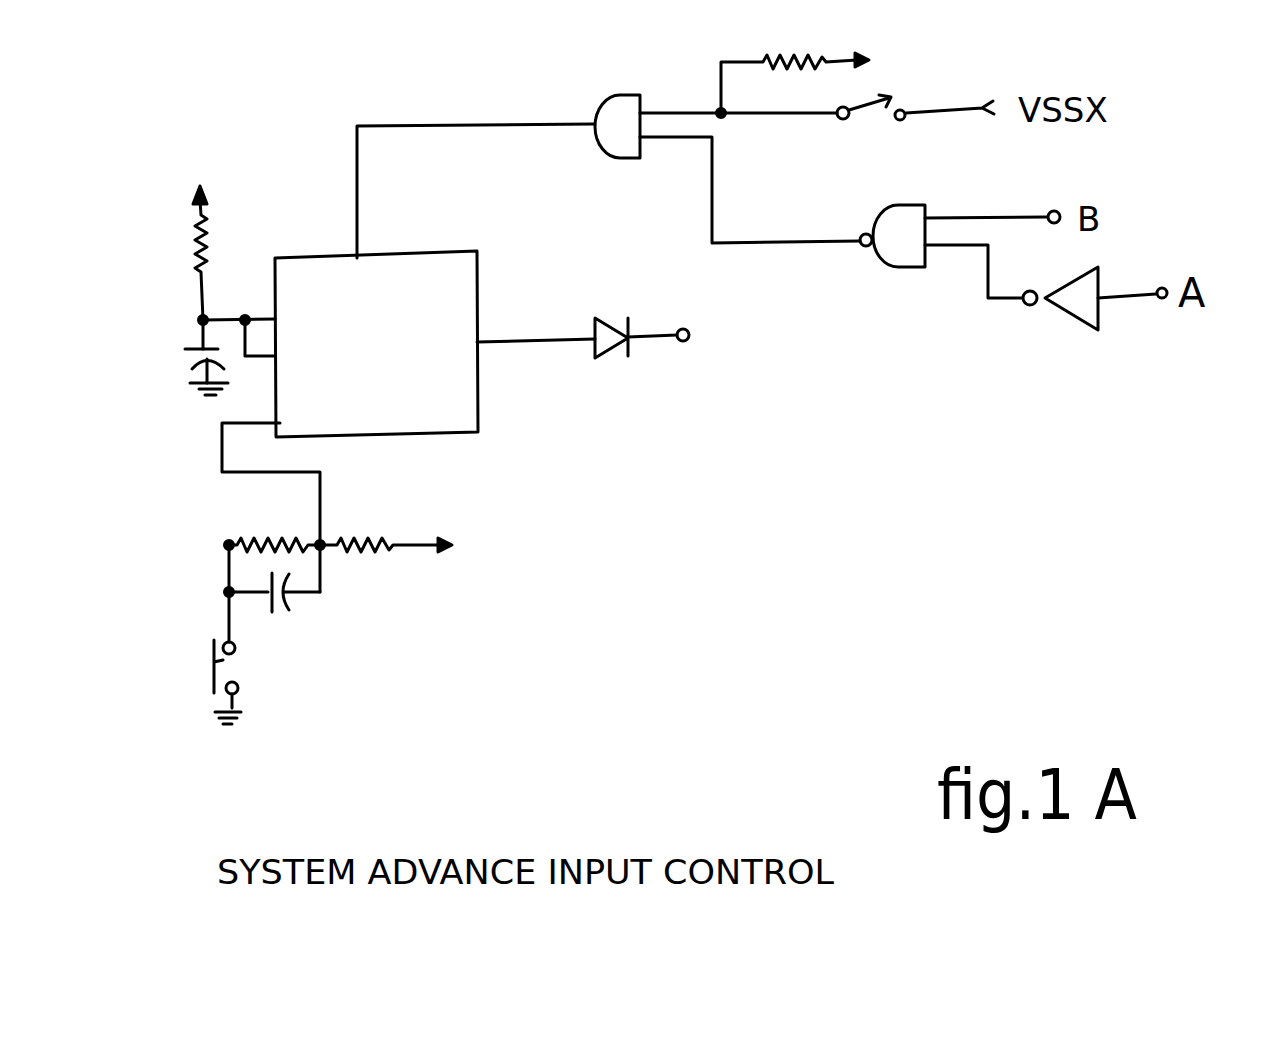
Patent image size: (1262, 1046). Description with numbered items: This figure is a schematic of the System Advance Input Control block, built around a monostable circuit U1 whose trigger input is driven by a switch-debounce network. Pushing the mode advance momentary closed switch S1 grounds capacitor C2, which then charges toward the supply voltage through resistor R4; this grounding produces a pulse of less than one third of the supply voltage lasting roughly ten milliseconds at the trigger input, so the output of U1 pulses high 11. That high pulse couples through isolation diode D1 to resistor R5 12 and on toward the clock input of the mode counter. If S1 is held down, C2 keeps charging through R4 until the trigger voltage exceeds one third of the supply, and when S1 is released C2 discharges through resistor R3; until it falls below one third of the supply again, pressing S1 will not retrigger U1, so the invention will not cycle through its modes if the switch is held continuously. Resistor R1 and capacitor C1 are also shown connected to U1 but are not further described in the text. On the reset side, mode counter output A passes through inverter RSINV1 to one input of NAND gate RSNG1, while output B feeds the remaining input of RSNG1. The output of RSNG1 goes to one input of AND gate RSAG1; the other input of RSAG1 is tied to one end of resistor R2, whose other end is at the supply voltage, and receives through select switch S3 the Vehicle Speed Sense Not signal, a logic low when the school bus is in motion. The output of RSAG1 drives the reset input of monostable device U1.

The input advance circuit 11 is at (534, 330).
The R5 12 is at (686, 335).
The resistor R1 is at (211, 237).
The capacitor C1 is at (181, 357).
The monostable circuit U1 is at (376, 344).
The isolation diode D1 is at (609, 313).
The resistor R2 is at (820, 81).
The resistor R3 is at (274, 523).
The resistor R4 is at (409, 527).
The capacitor C2 is at (280, 598).
The mode advance momentary closed switch S1 is at (275, 680).
The select switch S3 is at (915, 124).
The AND gate RSAG1 is at (615, 110).
The NAND gate RSNG1 is at (896, 219).
The inverter RSINV1 is at (1074, 321).